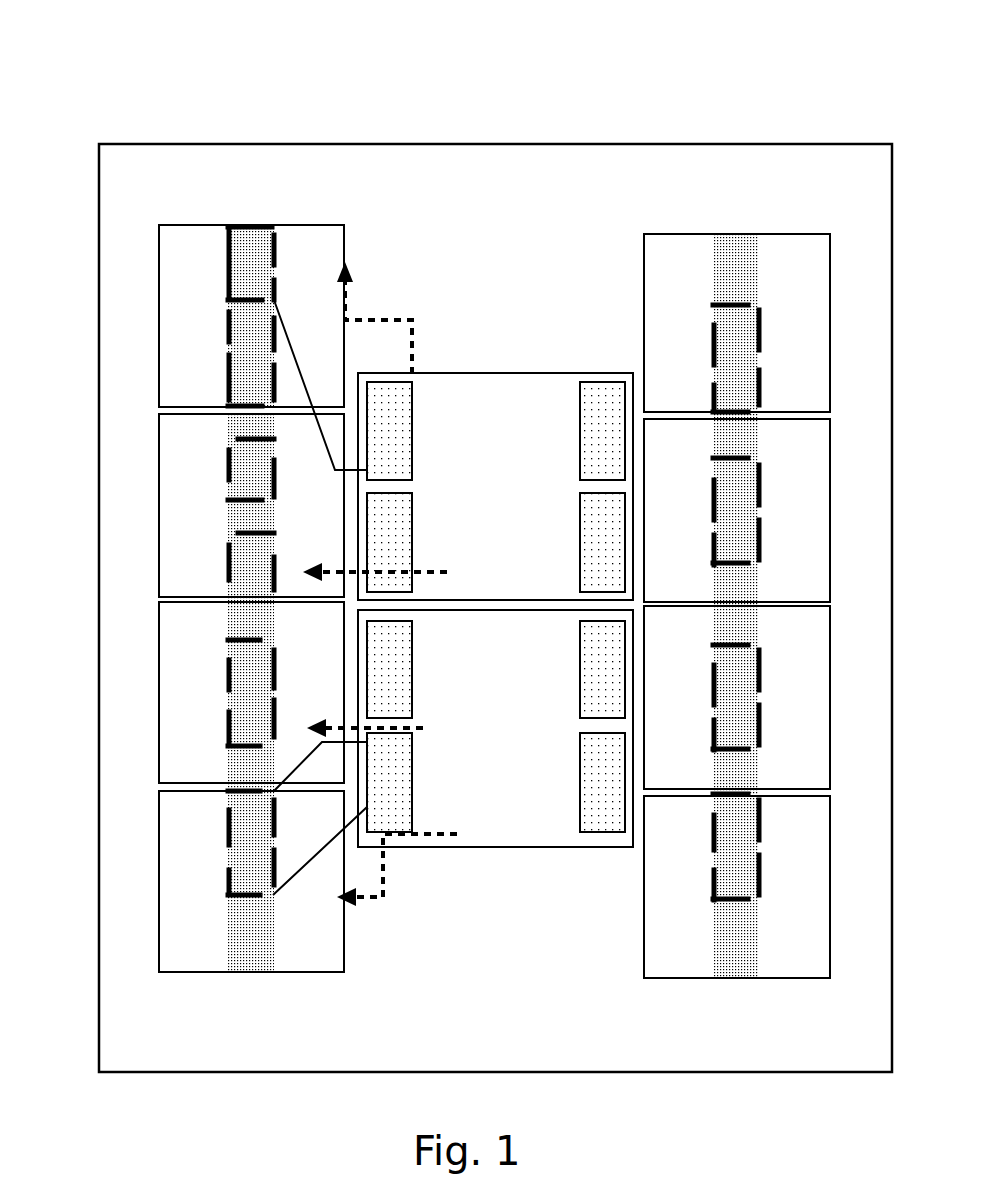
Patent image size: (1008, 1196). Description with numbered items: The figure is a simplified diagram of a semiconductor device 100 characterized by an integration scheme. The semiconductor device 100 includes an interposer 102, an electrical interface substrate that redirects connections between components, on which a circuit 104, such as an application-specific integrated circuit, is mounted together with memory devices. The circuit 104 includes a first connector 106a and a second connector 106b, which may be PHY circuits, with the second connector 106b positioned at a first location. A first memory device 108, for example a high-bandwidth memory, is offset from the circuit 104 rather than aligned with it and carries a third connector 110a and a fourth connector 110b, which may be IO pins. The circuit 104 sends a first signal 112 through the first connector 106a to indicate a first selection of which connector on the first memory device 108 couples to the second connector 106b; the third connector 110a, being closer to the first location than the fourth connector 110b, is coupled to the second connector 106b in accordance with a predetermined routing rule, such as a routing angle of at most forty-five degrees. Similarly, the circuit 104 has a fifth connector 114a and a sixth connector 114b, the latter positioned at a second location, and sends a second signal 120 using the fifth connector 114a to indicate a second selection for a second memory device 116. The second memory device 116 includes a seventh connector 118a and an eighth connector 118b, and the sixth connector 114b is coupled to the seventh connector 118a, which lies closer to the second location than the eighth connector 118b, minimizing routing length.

The semiconductor device 100 is at (735, 106).
The interposer 102 is at (518, 172).
The circuit 104 is at (492, 405).
The first connector 106a is at (412, 375).
The second connector 106b is at (395, 436).
The first memory device 108 is at (303, 242).
The third connector 110a is at (250, 358).
The fourth connector 110b is at (258, 253).
The first signal 112 is at (383, 320).
The fifth connector 114a is at (412, 573).
The sixth connector 114b is at (395, 503).
The second memory device 116 is at (180, 573).
The seventh connector 118a is at (250, 555).
The eighth connector 118b is at (250, 475).
The second signal 120 is at (343, 573).